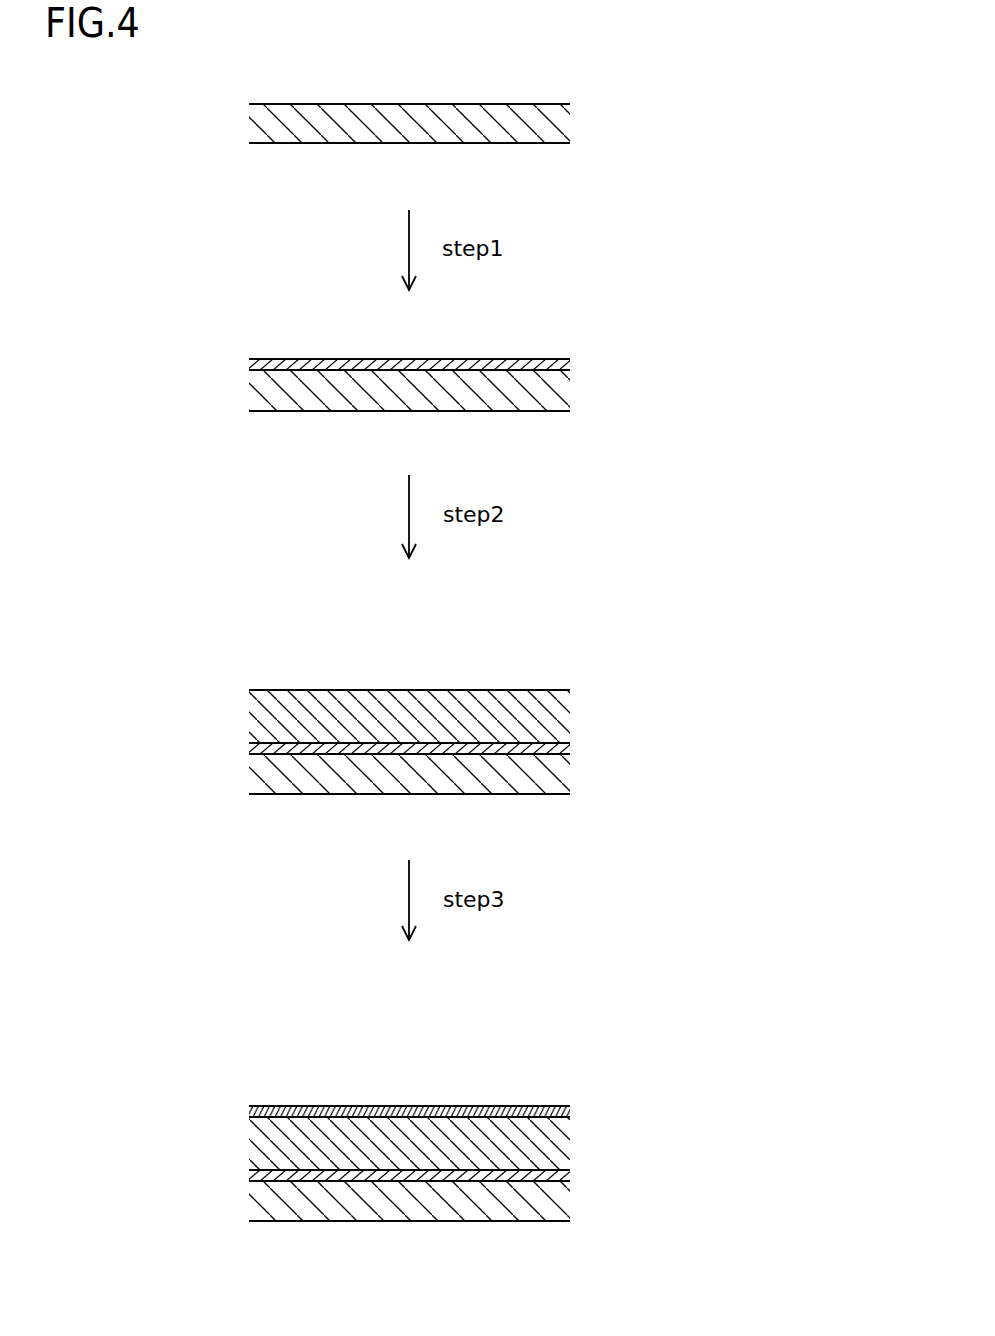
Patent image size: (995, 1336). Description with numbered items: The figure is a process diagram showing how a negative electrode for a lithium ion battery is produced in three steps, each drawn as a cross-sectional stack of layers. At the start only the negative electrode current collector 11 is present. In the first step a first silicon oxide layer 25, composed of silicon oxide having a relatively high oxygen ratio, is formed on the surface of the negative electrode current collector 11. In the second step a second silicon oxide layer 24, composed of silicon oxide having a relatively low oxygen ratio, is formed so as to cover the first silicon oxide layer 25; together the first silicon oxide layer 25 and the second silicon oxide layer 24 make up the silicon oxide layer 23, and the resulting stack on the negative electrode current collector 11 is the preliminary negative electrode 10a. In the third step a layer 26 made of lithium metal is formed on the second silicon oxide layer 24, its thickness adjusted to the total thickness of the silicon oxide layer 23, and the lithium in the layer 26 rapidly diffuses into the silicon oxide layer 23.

The preliminary negative electrode 10a is at (620, 617).
The negative electrode current collector 11 is at (621, 123).
The silicon oxide layer 23 is at (653, 758).
The second silicon oxide layer 24 is at (620, 700).
The first silicon oxide layer 25 is at (621, 361).
The layer made of lithium metal 26 is at (621, 1090).